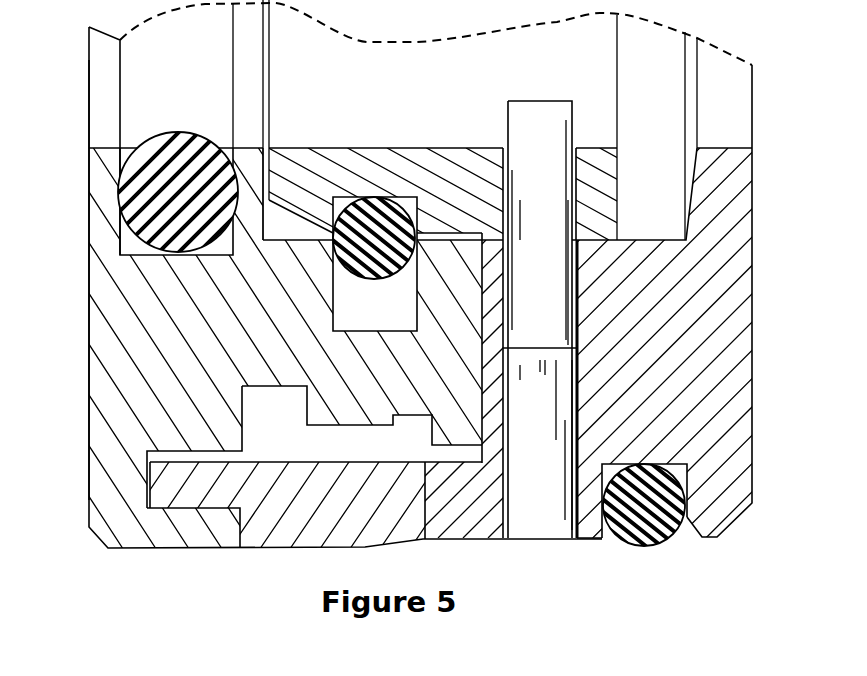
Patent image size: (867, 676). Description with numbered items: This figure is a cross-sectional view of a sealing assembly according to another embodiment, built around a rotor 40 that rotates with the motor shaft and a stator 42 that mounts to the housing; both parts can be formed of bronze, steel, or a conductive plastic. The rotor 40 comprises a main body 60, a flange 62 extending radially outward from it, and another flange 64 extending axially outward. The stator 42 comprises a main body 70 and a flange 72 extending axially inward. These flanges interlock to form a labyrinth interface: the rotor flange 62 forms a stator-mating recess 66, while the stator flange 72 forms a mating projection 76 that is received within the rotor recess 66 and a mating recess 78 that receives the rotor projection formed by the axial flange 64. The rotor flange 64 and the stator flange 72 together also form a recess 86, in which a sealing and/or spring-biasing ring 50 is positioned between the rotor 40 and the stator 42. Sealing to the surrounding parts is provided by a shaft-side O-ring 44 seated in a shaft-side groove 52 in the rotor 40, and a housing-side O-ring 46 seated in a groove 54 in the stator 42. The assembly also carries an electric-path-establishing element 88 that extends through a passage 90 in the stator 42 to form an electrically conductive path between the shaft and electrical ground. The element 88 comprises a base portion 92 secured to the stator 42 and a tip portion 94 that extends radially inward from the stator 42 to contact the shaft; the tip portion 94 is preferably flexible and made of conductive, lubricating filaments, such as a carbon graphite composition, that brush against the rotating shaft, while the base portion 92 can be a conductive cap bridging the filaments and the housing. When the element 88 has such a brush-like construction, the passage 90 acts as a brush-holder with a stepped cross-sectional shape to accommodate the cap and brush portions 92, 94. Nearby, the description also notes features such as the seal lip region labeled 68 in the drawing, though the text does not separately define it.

The rotor 40 is at (92, 352).
The stator 42 is at (753, 323).
The shaft-side O-ring 44 is at (187, 163).
The housing-side O-ring 46 is at (660, 535).
The sealing and/or spring-biasing ring 50 is at (390, 222).
The shaft-side groove 52 is at (124, 153).
The shaft-side groove 54 is at (605, 530).
The main body 60 is at (145, 394).
The flange 62 is at (188, 533).
The flange 64 is at (358, 427).
The stator-mating recess 66 is at (213, 452).
The seal lip 68 is at (295, 290).
The main body 70 is at (713, 387).
The flange 72 is at (437, 183).
The mating projection 76 is at (275, 527).
The mating recess 78 is at (294, 234).
The recess 86 is at (354, 313).
The electric-path-establishing element 88 is at (578, 415).
The passage 90 is at (506, 478).
The base portion 92 is at (543, 460).
The tip portion 94 is at (535, 117).